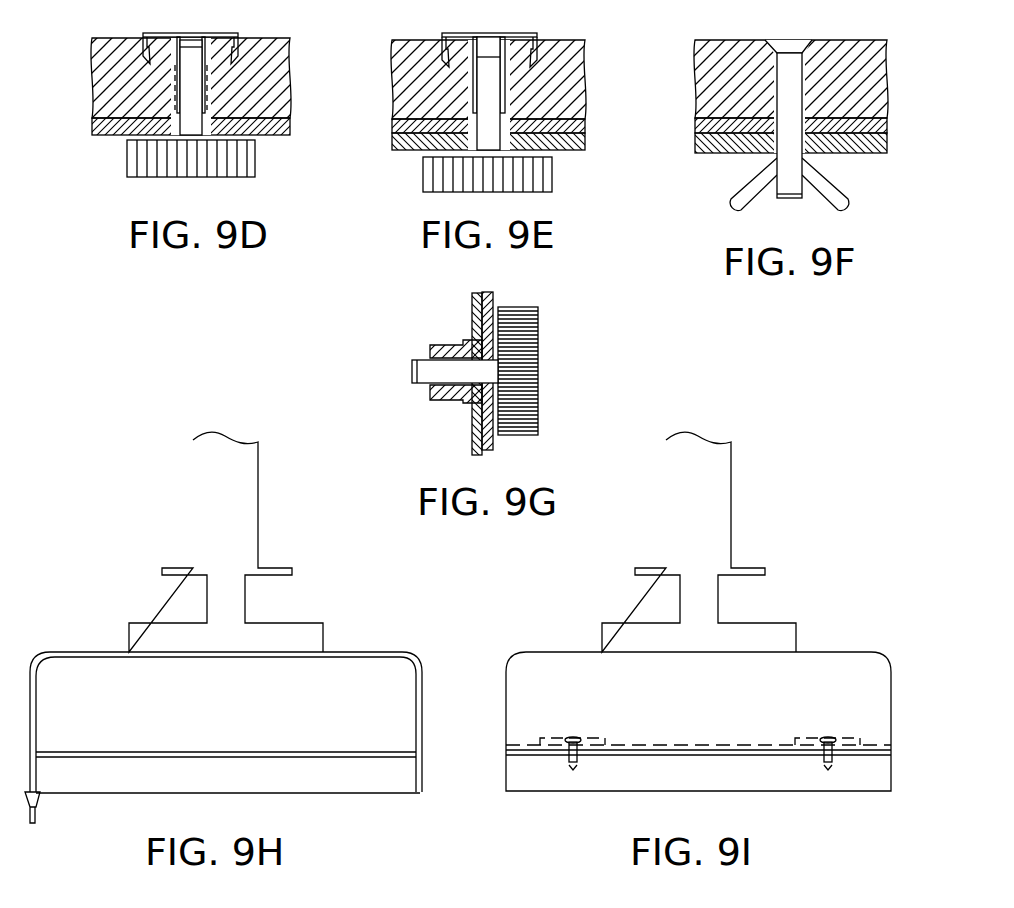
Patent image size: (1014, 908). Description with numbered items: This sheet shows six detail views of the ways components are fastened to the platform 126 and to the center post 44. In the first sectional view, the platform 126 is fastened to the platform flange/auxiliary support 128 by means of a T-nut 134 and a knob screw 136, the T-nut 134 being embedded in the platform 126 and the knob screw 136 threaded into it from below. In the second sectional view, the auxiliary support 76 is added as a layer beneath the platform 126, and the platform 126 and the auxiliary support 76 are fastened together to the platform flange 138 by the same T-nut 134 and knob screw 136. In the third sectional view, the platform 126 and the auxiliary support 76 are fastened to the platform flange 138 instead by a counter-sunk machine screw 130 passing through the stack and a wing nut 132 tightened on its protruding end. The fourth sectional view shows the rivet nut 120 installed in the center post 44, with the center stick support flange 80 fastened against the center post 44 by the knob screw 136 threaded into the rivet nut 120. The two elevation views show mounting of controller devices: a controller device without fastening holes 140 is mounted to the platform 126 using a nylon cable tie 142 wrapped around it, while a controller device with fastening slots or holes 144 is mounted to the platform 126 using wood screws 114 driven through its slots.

In FIG. 9D, the platform 126 is at (110, 38).
In FIG. 9E, the platform 126 is at (410, 40).
In FIG. 9F, the platform 126 is at (715, 40).
In FIG. 9H, the platform 126 is at (285, 772).
In FIG. 9I, the platform 126 is at (525, 778).
In FIG. 9D, the T-nut 134 is at (233, 33).
In FIG. 9E, the T-nut 134 is at (527, 33).
In FIG. 9D, the platform flange/auxiliary support 128 is at (102, 135).
In FIG. 9D, the knob screw 136 is at (247, 153).
In FIG. 9E, the knob screw 136 is at (543, 173).
In FIG. 9G, the knob screw 136 is at (537, 380).
In FIG. 9E, the auxiliary support 76 is at (393, 128).
In FIG. 9F, the auxiliary support 76 is at (697, 127).
In FIG. 9E, the platform flange 138 is at (393, 150).
In FIG. 9F, the platform flange 138 is at (702, 150).
In FIG. 9F, the counter-sunk machine screw 130 is at (800, 42).
In FIG. 9F, the wing nut 132 is at (820, 193).
In FIG. 9G, the center post 44 is at (470, 313).
In FIG. 9G, the center stick support flange 80 is at (493, 293).
In FIG. 9G, the rivet nut 120 is at (450, 400).
In FIG. 9H, the controller device without fastening holes 140 is at (205, 522).
In FIG. 9H, the nylon cable tie 142 is at (365, 652).
In FIG. 9I, the controller device with fastening slots or holes 144 is at (724, 517).
In FIG. 9I, the wood screws 114 is at (573, 740).